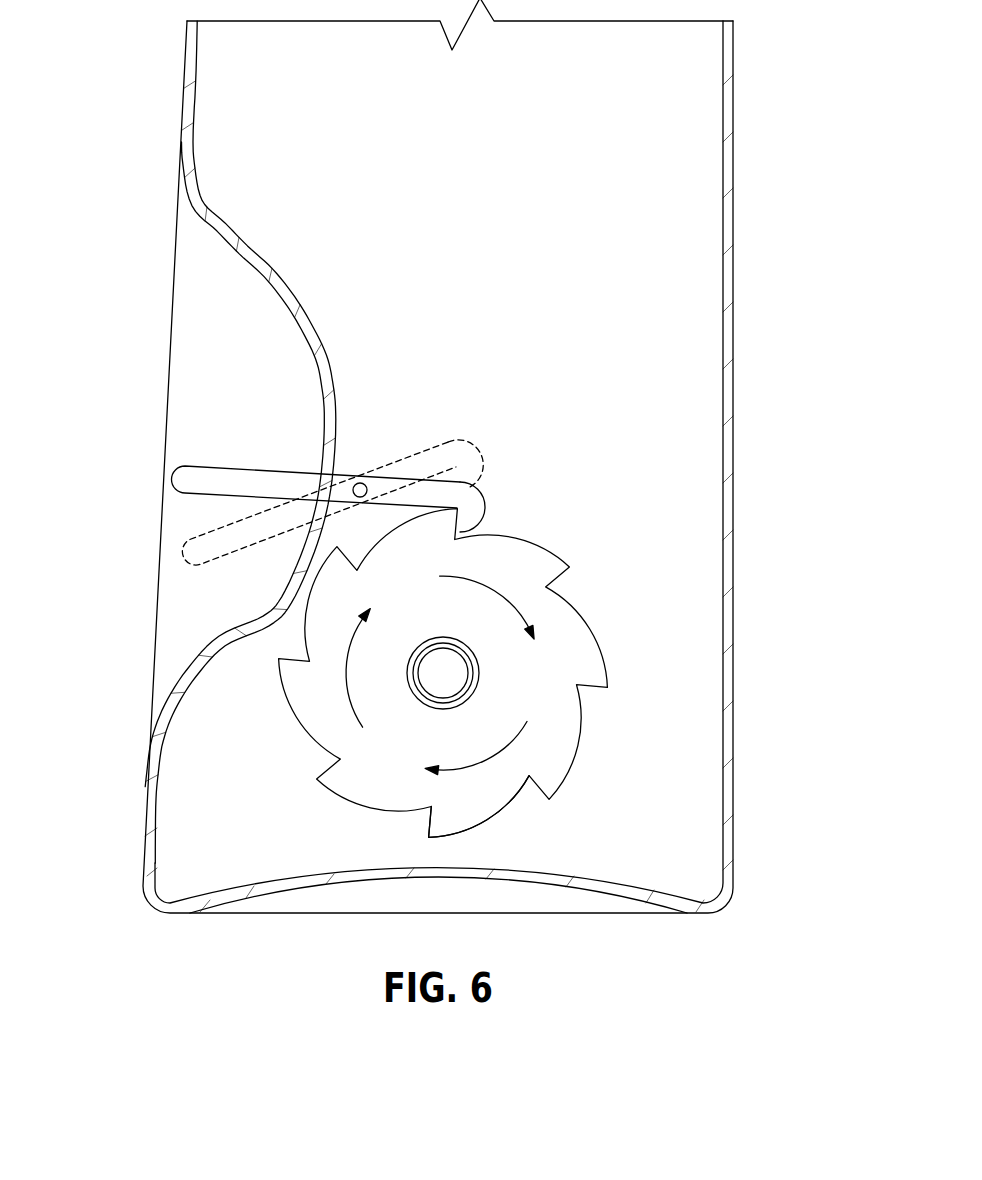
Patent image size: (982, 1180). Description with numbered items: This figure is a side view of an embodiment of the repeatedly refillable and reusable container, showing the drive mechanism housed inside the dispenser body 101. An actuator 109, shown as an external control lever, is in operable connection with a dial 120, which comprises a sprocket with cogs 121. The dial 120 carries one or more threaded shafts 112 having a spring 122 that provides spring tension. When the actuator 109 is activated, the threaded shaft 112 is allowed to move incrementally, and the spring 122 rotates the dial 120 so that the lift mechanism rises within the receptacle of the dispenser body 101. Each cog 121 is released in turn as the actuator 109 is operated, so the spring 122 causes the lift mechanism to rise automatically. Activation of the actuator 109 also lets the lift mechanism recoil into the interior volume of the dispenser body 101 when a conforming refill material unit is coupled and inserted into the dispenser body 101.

The dispenser body 101 is at (734, 555).
The actuator 109 is at (181, 467).
The threaded shaft 112 is at (478, 663).
The dial 120 is at (540, 775).
The cog 121 is at (534, 792).
The spring 122 is at (476, 692).